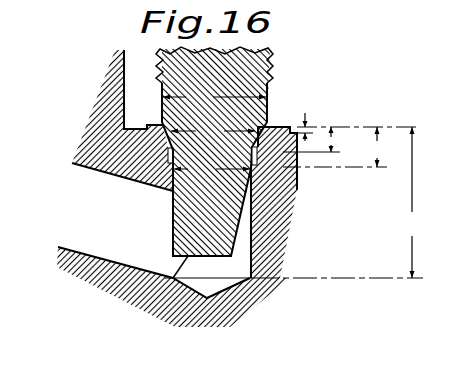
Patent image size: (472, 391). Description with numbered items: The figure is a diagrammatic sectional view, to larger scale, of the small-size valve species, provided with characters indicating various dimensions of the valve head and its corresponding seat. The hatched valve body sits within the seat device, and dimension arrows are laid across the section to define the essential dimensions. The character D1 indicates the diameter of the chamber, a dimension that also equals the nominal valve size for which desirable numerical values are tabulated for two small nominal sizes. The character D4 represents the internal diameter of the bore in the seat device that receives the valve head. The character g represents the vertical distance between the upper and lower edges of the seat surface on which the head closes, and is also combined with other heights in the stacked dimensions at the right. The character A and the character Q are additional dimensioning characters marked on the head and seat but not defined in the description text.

The shank diameter A is at (214, 97).
The diameter of the chamber D1 is at (213, 134).
The internal diameter of the bore in the seat device D4 is at (212, 172).
The step height Q is at (305, 122).
The vertical distance between the upper and lower edges of the seat surface g is at (311, 139).